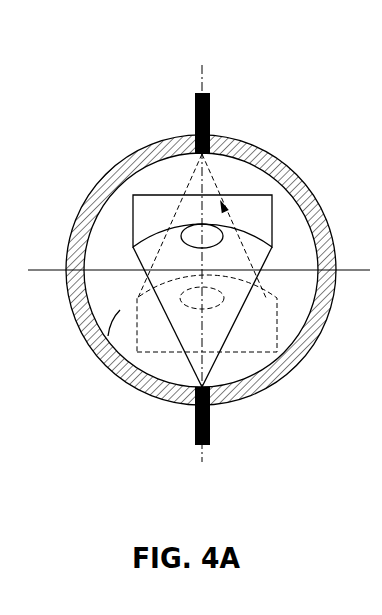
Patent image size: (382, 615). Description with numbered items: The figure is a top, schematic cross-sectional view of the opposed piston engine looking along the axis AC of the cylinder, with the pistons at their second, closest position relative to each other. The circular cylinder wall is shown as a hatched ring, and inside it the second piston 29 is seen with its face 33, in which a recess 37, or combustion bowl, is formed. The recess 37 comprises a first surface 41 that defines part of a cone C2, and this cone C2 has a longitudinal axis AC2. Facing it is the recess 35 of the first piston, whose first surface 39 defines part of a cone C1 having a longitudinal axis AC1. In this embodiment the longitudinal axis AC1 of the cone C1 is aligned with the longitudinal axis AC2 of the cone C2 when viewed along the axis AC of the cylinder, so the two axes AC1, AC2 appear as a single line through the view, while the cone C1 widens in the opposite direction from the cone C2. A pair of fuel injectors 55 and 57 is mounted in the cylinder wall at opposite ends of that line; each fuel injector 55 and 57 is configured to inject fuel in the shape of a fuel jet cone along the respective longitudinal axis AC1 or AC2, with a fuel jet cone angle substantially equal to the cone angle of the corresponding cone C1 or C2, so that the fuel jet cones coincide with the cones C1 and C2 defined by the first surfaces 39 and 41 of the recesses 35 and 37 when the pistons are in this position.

The piston 29 is at (170, 368).
The face 33 is at (95, 345).
The recess 35 is at (202, 270).
The recess 37 is at (220, 330).
The first surface 39 is at (202, 270).
The first surface 41 is at (183, 310).
The fuel injector 55 is at (211, 108).
The fuel injector 57 is at (209, 440).
The axis of the cylinder AC is at (207, 269).
The longitudinal axis AC1 is at (203, 80).
The longitudinal axis AC2 is at (218, 235).
The cone C1 is at (224, 237).
The cone C2 is at (236, 288).